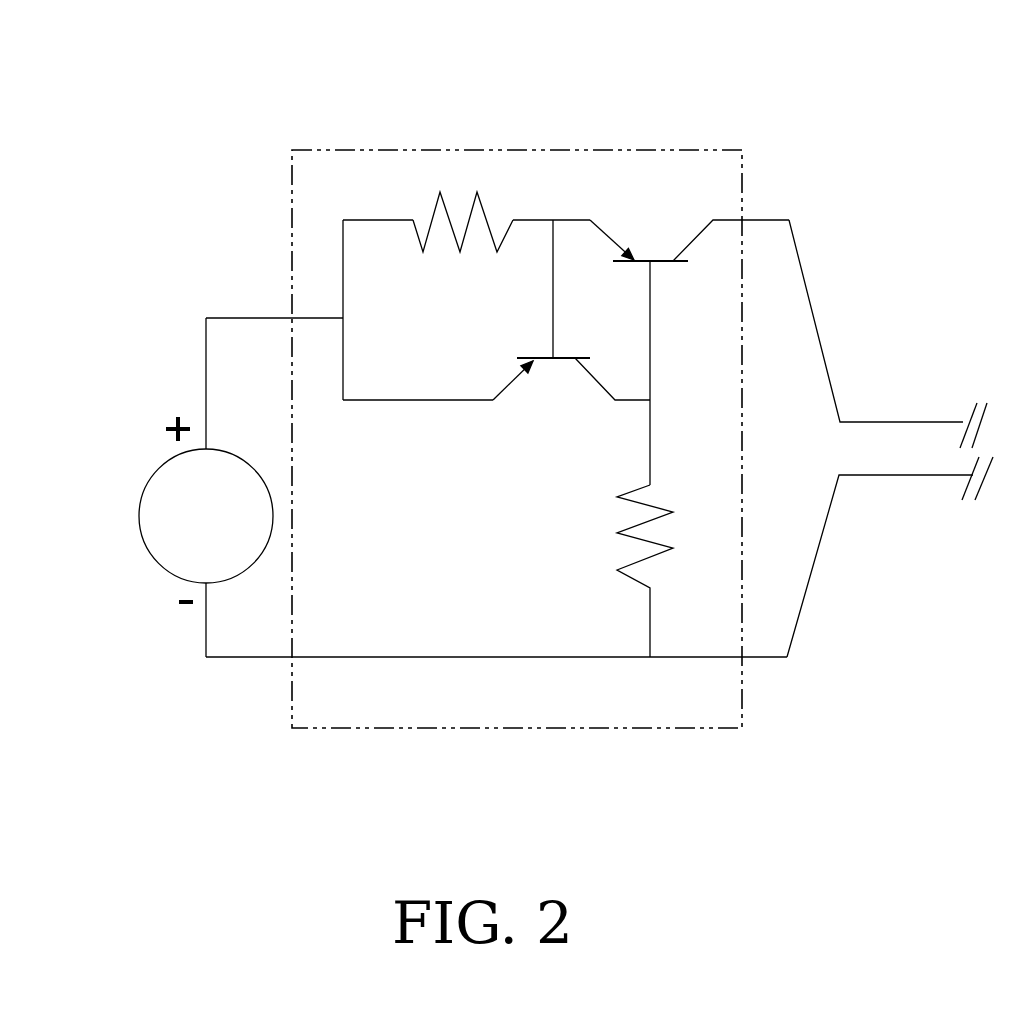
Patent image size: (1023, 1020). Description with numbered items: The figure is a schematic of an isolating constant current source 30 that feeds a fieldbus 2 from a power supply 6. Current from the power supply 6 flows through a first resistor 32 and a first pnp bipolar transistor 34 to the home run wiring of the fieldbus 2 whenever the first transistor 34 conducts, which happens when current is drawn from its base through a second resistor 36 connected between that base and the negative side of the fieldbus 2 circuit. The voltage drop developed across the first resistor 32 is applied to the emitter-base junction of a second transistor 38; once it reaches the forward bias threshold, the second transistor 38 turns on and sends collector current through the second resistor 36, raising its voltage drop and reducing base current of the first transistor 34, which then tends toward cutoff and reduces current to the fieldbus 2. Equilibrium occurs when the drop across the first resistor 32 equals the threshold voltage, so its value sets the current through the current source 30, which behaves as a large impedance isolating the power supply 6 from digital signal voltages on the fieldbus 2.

The fieldbus 2 is at (822, 345).
The power supply 6 is at (148, 482).
The current source 30 is at (545, 150).
The first resistor (R1) 32 is at (440, 200).
The first pnp bipolar transistor (Q1) 34 is at (640, 261).
The second resistor (R2) 36 is at (668, 550).
The second transistor (Q2) 38 is at (533, 358).